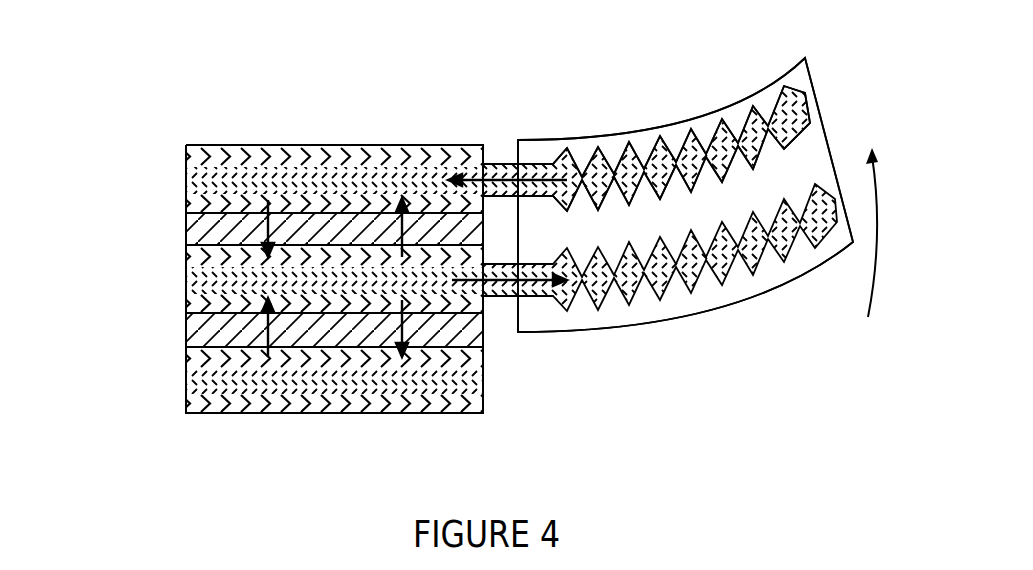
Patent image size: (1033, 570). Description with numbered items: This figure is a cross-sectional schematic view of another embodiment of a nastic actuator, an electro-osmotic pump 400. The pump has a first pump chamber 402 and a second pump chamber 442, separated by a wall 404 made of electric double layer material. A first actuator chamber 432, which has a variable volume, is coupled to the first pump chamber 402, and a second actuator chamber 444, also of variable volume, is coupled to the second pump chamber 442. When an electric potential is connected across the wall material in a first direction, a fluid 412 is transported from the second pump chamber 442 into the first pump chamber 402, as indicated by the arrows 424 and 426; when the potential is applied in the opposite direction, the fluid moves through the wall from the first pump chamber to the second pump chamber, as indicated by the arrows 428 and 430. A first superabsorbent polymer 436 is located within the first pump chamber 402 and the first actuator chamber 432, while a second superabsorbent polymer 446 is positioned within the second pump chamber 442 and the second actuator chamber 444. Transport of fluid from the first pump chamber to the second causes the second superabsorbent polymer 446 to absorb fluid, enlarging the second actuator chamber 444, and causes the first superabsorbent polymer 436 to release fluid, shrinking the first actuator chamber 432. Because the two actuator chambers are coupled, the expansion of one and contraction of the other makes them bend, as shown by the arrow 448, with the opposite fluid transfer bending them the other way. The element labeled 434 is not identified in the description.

The electro-osmotic pump 400 is at (337, 110).
The first pump chamber 402 is at (163, 278).
The wall 404 is at (187, 226).
The fluid 412 is at (187, 205).
The arrow 424 is at (255, 228).
The arrow 426 is at (255, 347).
The arrow 428 is at (408, 227).
The arrow 430 is at (406, 329).
The first actuator chamber 432 is at (697, 330).
The serrated finger 434 is at (748, 105).
The first superabsorbent polymer 436 is at (357, 287).
The second pump chamber 442 is at (163, 170).
The second actuator chamber 444 is at (668, 105).
The second superabsorbent polymer 446 is at (626, 158).
The arrow 448 is at (870, 267).